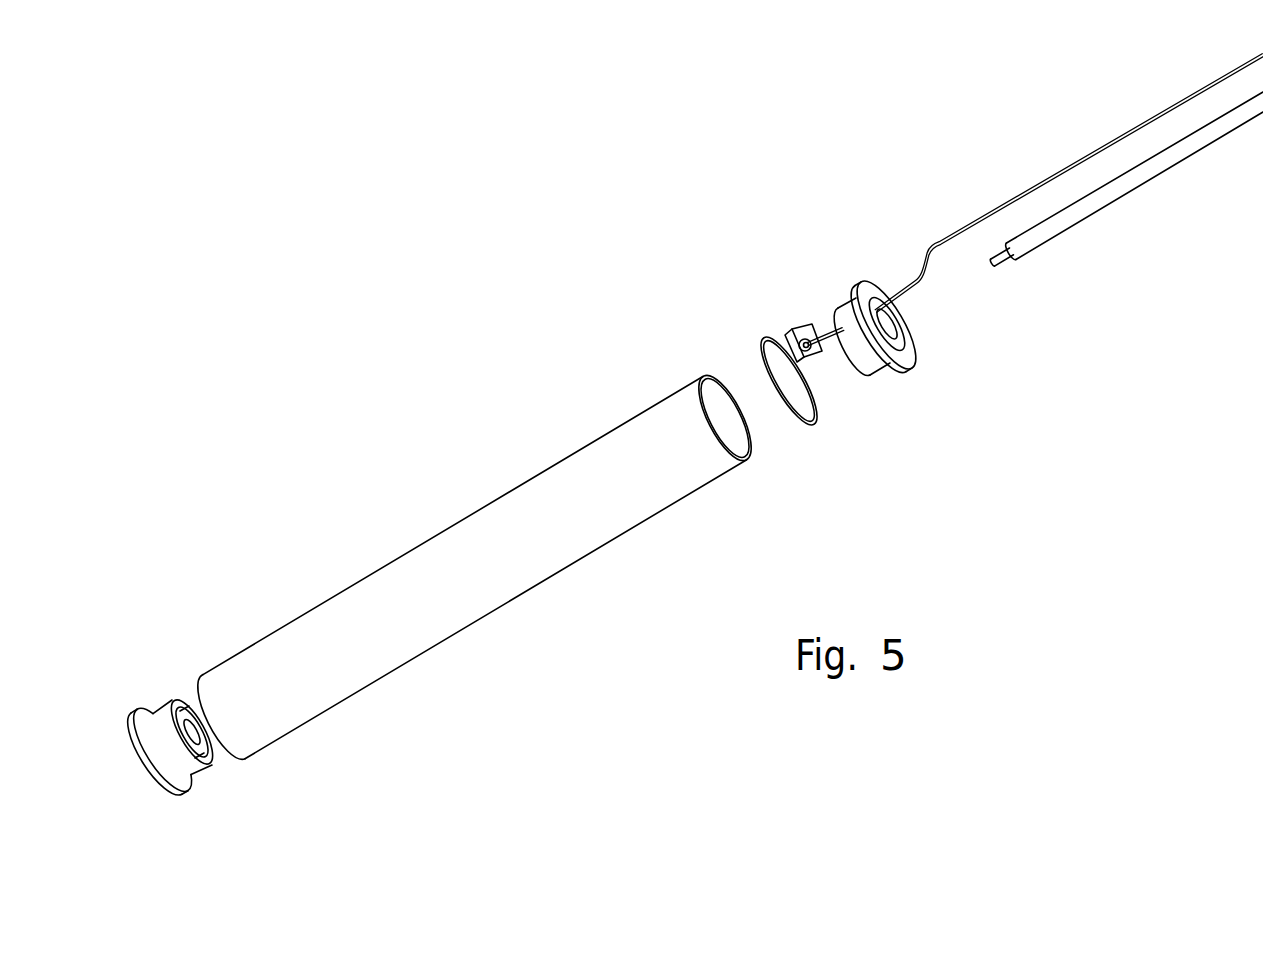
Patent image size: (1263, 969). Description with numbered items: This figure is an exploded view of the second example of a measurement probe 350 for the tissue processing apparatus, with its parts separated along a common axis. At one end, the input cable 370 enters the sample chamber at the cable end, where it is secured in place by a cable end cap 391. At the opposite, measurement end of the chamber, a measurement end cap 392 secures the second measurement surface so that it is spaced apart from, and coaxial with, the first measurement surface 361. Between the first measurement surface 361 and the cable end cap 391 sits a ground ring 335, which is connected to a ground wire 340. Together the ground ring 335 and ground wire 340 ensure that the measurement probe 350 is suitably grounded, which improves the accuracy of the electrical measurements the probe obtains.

The ground ring 335 is at (768, 335).
The ground wire 340 is at (1017, 195).
The measurement probe 350 is at (449, 563).
The first measurement surface 361 is at (700, 380).
The input cable 370 is at (1107, 193).
The cable end cap 391 is at (912, 368).
The measurement end cap 392 is at (142, 705).